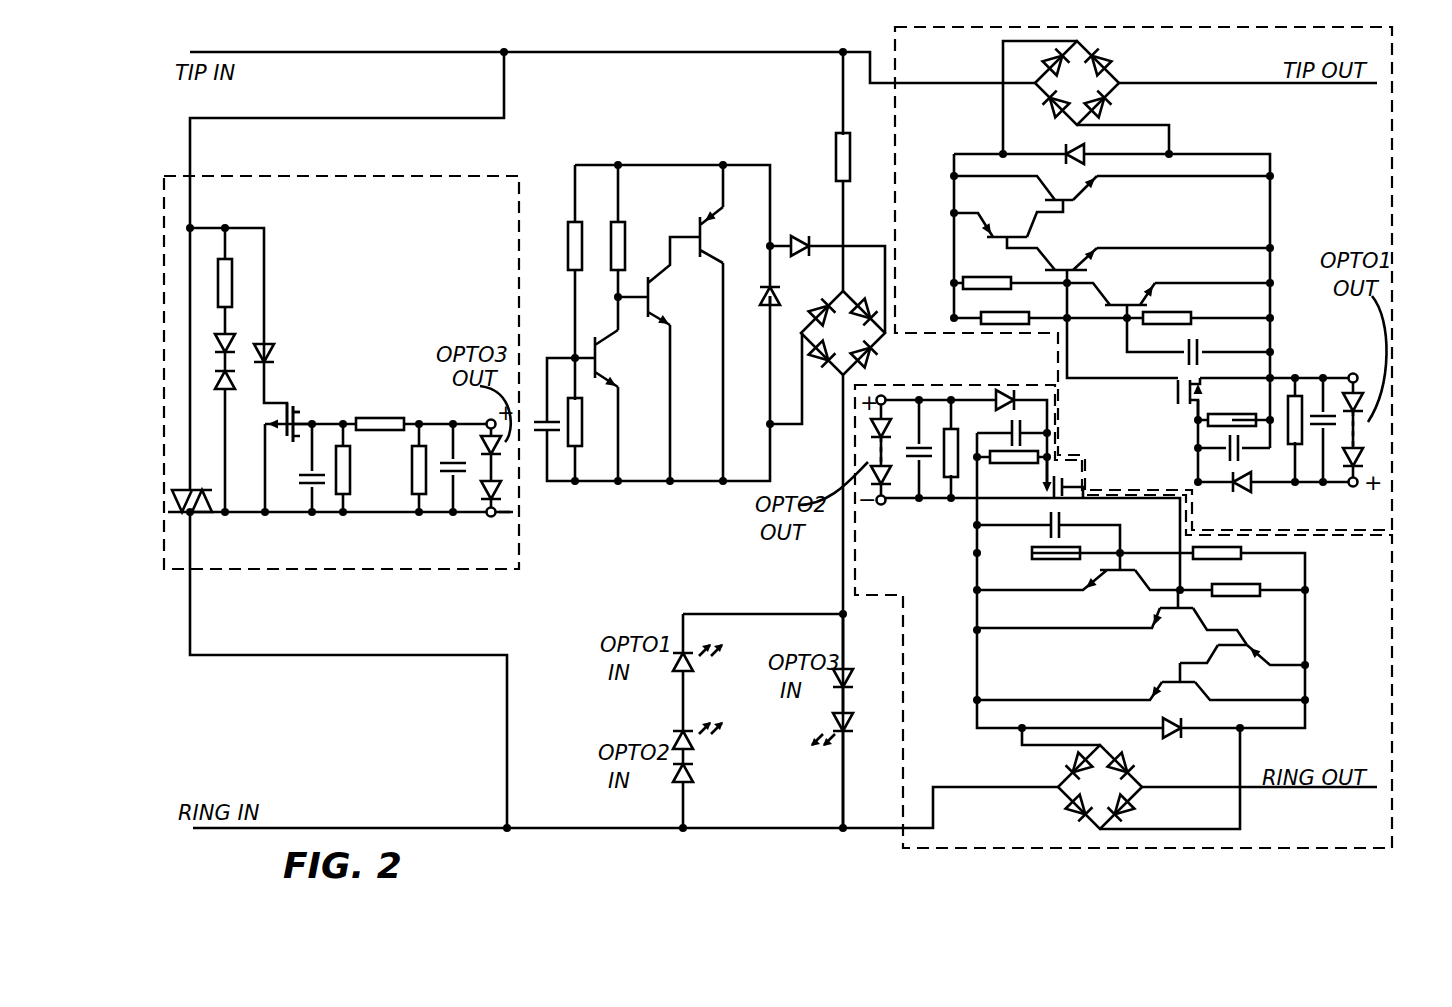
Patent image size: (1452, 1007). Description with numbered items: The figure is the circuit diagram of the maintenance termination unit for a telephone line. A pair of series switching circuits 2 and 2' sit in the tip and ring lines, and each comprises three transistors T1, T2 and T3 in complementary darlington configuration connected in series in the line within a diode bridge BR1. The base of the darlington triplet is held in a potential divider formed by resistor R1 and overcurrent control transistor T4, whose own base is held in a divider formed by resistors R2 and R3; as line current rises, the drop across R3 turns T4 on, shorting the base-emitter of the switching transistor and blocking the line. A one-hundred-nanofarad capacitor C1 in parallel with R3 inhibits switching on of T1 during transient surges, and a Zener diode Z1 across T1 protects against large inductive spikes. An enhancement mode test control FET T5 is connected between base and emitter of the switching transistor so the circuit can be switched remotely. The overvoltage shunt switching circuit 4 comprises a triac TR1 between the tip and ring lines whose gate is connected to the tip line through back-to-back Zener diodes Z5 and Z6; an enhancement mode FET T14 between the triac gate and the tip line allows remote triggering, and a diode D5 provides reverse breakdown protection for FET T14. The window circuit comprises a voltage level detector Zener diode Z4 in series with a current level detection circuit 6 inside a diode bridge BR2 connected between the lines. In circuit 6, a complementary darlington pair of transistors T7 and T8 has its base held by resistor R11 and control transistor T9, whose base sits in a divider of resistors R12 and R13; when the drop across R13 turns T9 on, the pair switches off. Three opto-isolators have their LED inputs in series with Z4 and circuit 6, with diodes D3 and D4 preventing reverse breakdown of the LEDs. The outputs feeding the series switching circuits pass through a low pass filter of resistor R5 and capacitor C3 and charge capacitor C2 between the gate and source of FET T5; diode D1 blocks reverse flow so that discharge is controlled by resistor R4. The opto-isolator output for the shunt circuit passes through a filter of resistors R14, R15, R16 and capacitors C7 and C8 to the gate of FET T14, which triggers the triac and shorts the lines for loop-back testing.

The series switching circuit 2 is at (1164, 278).
The series switching circuit 2' is at (1147, 616).
The overvoltage shunt switching circuit 4 is at (405, 176).
The current level detection circuit 6 is at (668, 145).
The triac TR1 is at (185, 520).
The Zener diode Z5 is at (243, 338).
The Zener diode Z6 is at (230, 392).
The diode D5 is at (273, 357).
The enhancement mode FET T14 is at (292, 405).
The resistor R15 is at (380, 418).
The capacitor C8 is at (305, 490).
The resistor R16 is at (352, 490).
The resistor R14 is at (418, 490).
The capacitor C7 is at (460, 478).
The resistor R12 is at (568, 226).
The resistor R11 is at (622, 232).
The resistor R13 is at (583, 456).
The control transistor T9 is at (590, 342).
The transistor T8 is at (651, 302).
The transistor T7 is at (708, 228).
The voltage level detector Zener diode Z4 is at (800, 238).
The diode bridge BR2 is at (874, 362).
The diode D3 is at (700, 775).
The diode D4 is at (853, 688).
The diode bridge BR1 is at (1112, 62).
The Zener diode Z1 is at (1086, 150).
The transistor T1 is at (1092, 200).
The transistor T2 is at (1000, 225).
The transistor T3 is at (1090, 256).
The overcurrent control transistor T4 is at (1140, 292).
The enhancement mode test control FET T5 is at (1186, 410).
The resistor R1 is at (990, 280).
The resistor R2 is at (1000, 315).
The resistor R3 is at (1210, 311).
The resistor R4 is at (1216, 430).
The resistor R5 is at (1300, 392).
The capacitor C1 is at (1186, 366).
The capacitor C2 is at (1240, 460).
The capacitor C3 is at (1328, 432).
The diode D1 is at (1246, 488).